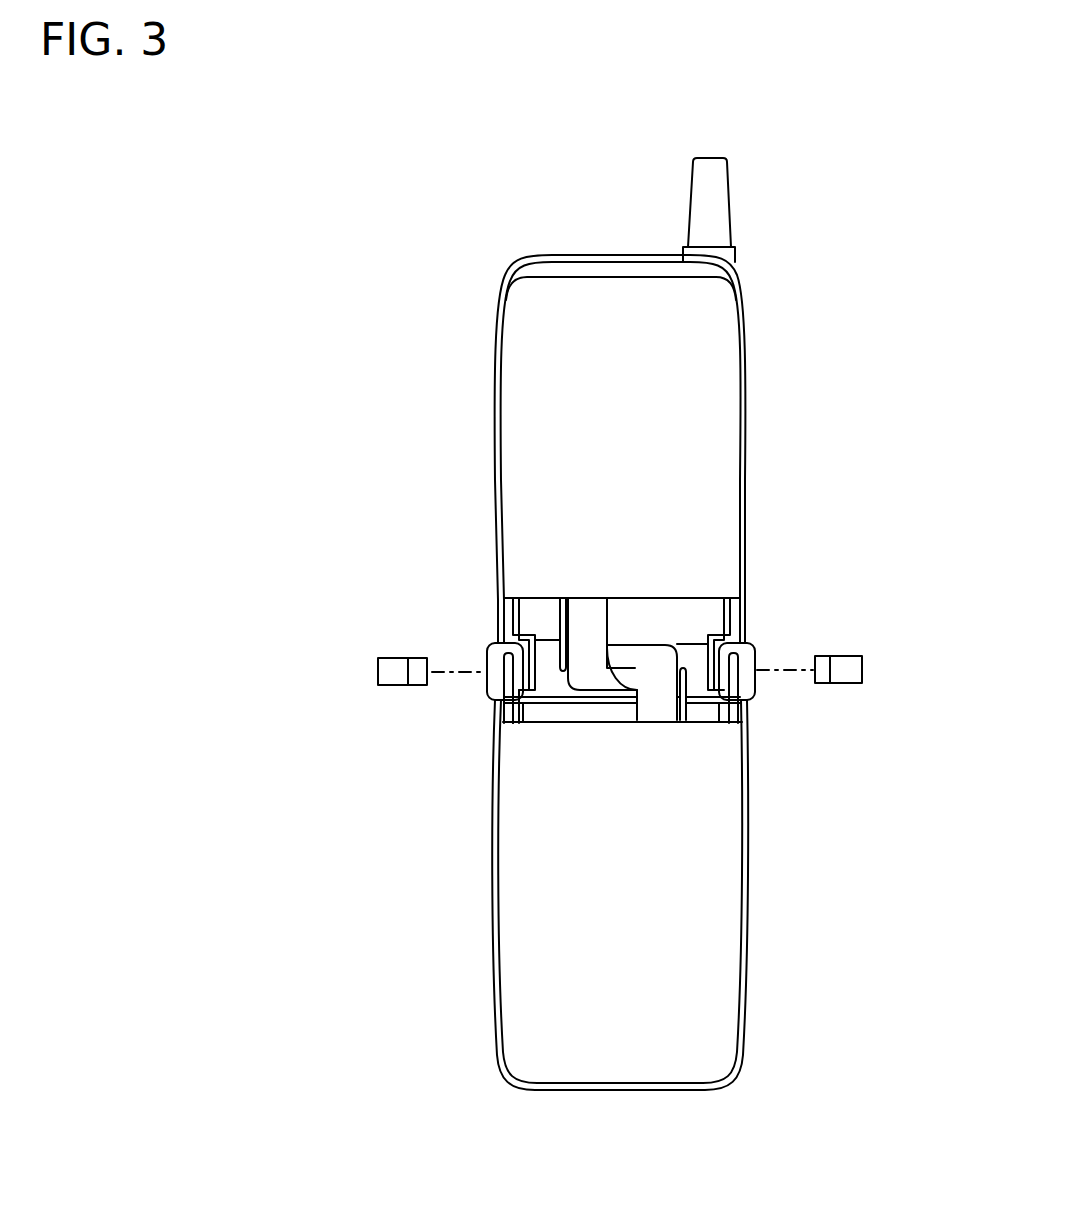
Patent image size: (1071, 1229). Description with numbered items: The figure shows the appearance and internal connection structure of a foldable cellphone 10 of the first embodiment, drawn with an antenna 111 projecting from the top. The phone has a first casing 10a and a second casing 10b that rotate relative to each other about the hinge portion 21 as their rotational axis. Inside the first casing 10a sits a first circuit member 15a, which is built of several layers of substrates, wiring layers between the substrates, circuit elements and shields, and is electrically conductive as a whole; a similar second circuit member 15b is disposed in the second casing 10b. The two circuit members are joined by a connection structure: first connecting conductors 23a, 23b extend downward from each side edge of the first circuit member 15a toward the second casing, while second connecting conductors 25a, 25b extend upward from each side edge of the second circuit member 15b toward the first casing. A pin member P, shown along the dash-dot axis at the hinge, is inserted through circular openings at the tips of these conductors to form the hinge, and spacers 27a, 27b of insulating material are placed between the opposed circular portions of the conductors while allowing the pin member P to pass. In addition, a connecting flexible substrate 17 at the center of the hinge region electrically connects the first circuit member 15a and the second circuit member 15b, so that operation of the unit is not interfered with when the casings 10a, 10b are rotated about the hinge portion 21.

The cellphone 10 is at (843, 150).
The antenna 111 is at (700, 203).
The first casing 10a is at (750, 430).
The second casing 10b is at (750, 828).
The first circuit member 15a is at (724, 334).
The second circuit member 15b is at (724, 920).
The connecting flexible substrate 17 is at (653, 657).
The hinge portion 21 is at (488, 657).
The first connecting conductor 23a is at (497, 613).
The first connecting conductor 23b is at (745, 612).
The second connecting conductor 25a is at (510, 705).
The second connecting conductor 25b is at (744, 690).
The spacer 27a is at (523, 702).
The right support portion 27b is at (736, 704).
The pin member P is at (378, 674).